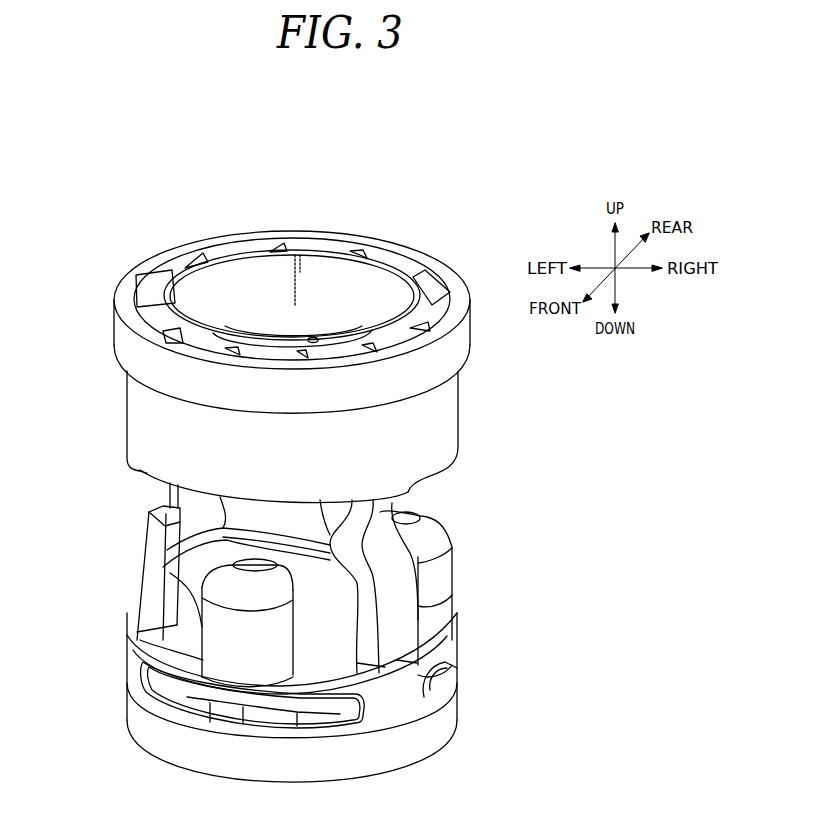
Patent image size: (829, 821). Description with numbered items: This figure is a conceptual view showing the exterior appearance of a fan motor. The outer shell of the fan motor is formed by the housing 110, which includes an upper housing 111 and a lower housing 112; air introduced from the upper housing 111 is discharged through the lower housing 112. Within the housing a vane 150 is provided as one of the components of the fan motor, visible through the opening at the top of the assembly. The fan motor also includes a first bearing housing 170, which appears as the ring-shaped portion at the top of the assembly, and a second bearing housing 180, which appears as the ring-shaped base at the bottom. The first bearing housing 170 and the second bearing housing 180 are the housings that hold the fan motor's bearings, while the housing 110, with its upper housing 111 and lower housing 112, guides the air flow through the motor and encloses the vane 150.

The housing 110 is at (551, 478).
The upper housing 111 is at (410, 692).
The lower housing 112 is at (432, 445).
The vane 150 is at (382, 284).
The first bearing housing 170 is at (125, 337).
The second bearing housing 180 is at (130, 668).